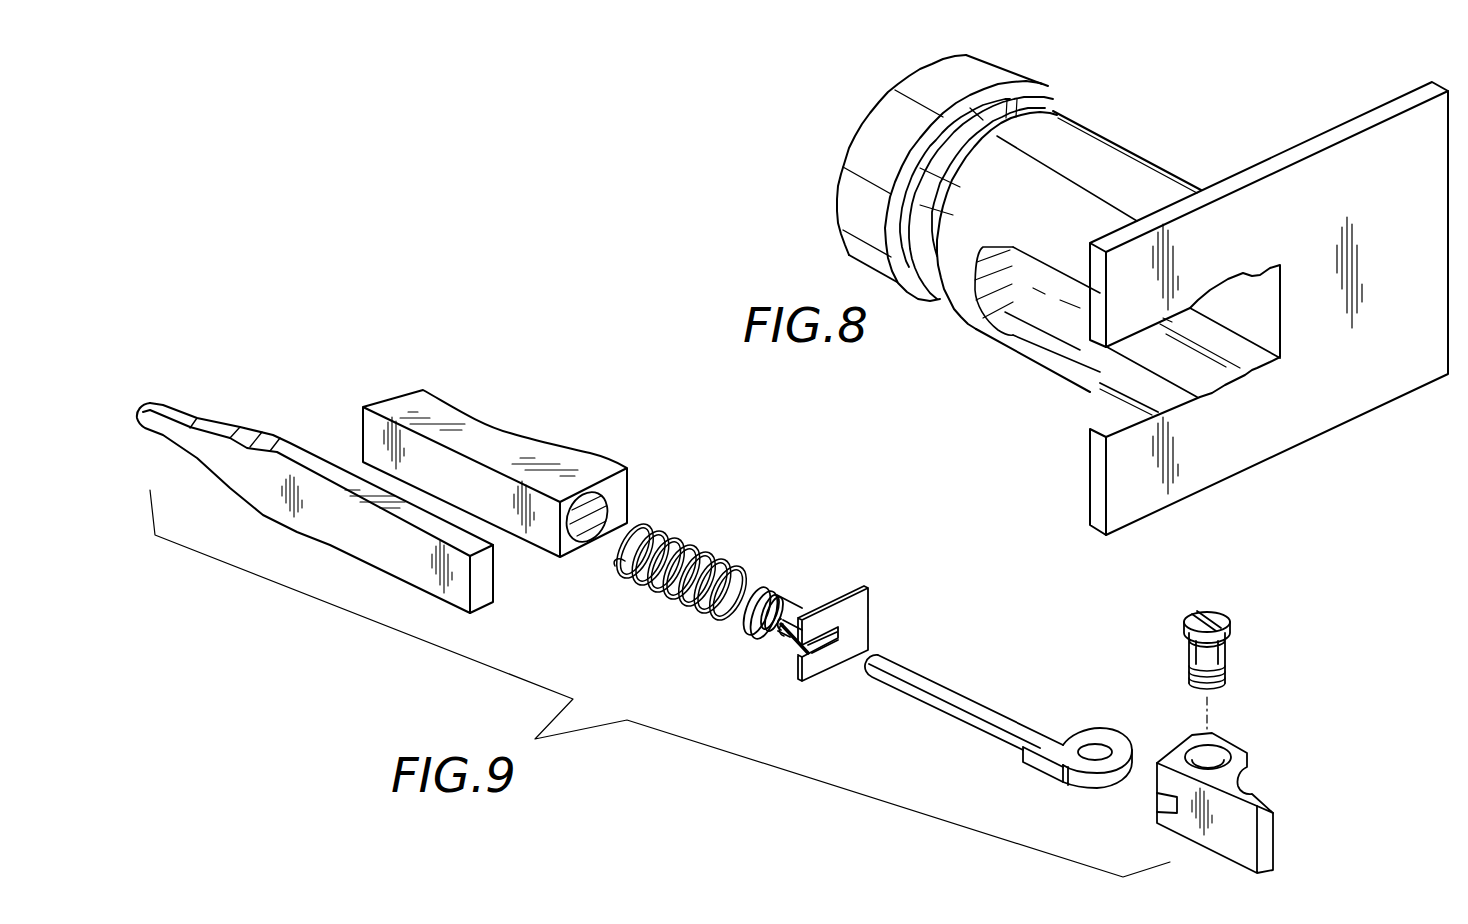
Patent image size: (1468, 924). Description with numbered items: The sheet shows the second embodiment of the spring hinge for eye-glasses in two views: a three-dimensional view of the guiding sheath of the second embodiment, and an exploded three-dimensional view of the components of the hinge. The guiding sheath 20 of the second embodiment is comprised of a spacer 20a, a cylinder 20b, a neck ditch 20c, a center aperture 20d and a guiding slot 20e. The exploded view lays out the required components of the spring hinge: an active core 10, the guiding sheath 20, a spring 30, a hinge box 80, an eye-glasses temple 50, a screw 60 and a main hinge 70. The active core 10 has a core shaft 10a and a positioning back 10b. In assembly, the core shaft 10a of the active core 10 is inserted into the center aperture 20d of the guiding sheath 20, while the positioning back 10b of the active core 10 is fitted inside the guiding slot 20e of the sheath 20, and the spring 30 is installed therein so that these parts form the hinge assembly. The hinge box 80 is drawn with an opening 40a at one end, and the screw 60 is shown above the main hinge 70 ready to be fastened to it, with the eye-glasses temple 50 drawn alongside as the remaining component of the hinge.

In FIG. 9, the active core 10 is at (998, 695).
In FIG. 9, the core shaft 10a is at (933, 677).
In FIG. 9, the positioning back 10b is at (1045, 763).
In FIG. 9, the guiding sheath 20 is at (785, 622).
In FIG. 8, the spacer 20a is at (1343, 161).
In FIG. 8, the cylinder 20b is at (1106, 147).
In FIG. 8, the neck ditch 20c is at (1004, 118).
In FIG. 8, the center aperture 20d is at (1220, 378).
In FIG. 9, the center aperture 20d is at (838, 647).
In FIG. 8, the guiding slot 20e is at (988, 283).
In FIG. 9, the guiding slot 20e is at (783, 633).
In FIG. 9, the spring 30 is at (689, 545).
In FIG. 9, the hole 40a is at (580, 526).
In FIG. 9, the eye-glasses temple 50 is at (282, 456).
In FIG. 9, the screw 60 is at (1217, 615).
In FIG. 9, the main hinge 70 is at (1250, 803).
In FIG. 9, the hinge box 80 is at (495, 495).